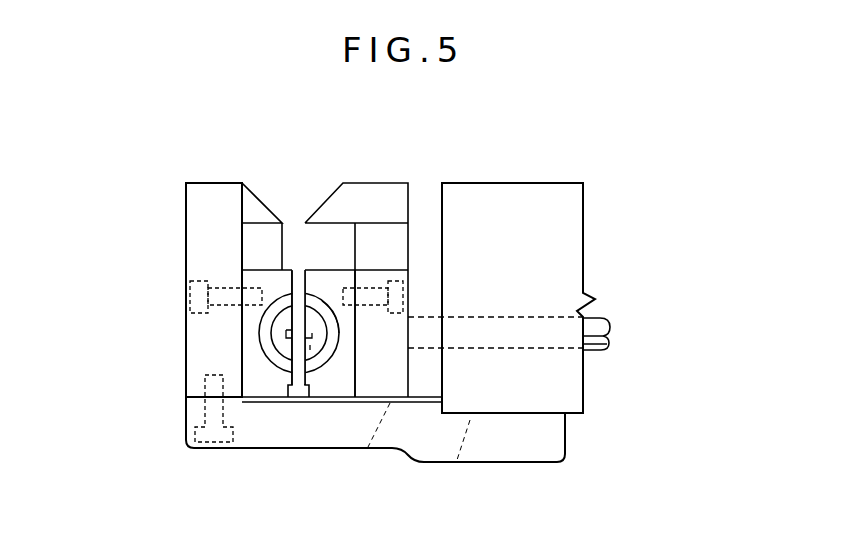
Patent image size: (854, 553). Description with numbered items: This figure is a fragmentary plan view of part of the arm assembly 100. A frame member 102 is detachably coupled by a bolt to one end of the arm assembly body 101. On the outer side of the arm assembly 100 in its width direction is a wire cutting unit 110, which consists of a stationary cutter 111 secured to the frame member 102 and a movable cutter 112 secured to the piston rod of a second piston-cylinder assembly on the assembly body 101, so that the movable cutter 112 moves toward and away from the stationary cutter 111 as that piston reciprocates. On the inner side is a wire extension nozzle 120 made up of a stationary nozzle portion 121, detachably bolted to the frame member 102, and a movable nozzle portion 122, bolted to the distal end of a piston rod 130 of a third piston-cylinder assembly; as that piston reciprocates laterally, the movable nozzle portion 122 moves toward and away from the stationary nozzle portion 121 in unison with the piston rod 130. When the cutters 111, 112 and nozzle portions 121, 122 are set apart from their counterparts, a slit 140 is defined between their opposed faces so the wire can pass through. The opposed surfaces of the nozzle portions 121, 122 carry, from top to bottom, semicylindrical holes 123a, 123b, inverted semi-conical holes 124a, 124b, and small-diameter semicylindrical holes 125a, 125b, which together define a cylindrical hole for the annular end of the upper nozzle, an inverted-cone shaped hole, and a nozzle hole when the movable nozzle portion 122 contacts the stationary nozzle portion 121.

The arm assembly 100 is at (593, 147).
The arm assembly body 101 is at (523, 450).
The frame member 102 is at (198, 233).
The wire cutting unit 110 is at (340, 130).
The stationary cutter 111 is at (260, 236).
The movable cutter 112 is at (312, 248).
The wire extension nozzle 120 is at (337, 496).
The stationary nozzle portion 121 is at (267, 388).
The movable nozzle portion 122 is at (313, 390).
The semicylindrical hole 123a is at (262, 320).
The semicylindrical hole 123b is at (322, 301).
The inverted semi-conical hole 124a is at (272, 335).
The inverted semi-conical hole 124b is at (323, 343).
The small-diameter semicylindrical hole 125a is at (287, 331).
The small-diameter semicylindrical hole 125b is at (314, 338).
The piston rod 130 is at (594, 320).
The slit 140 is at (298, 266).